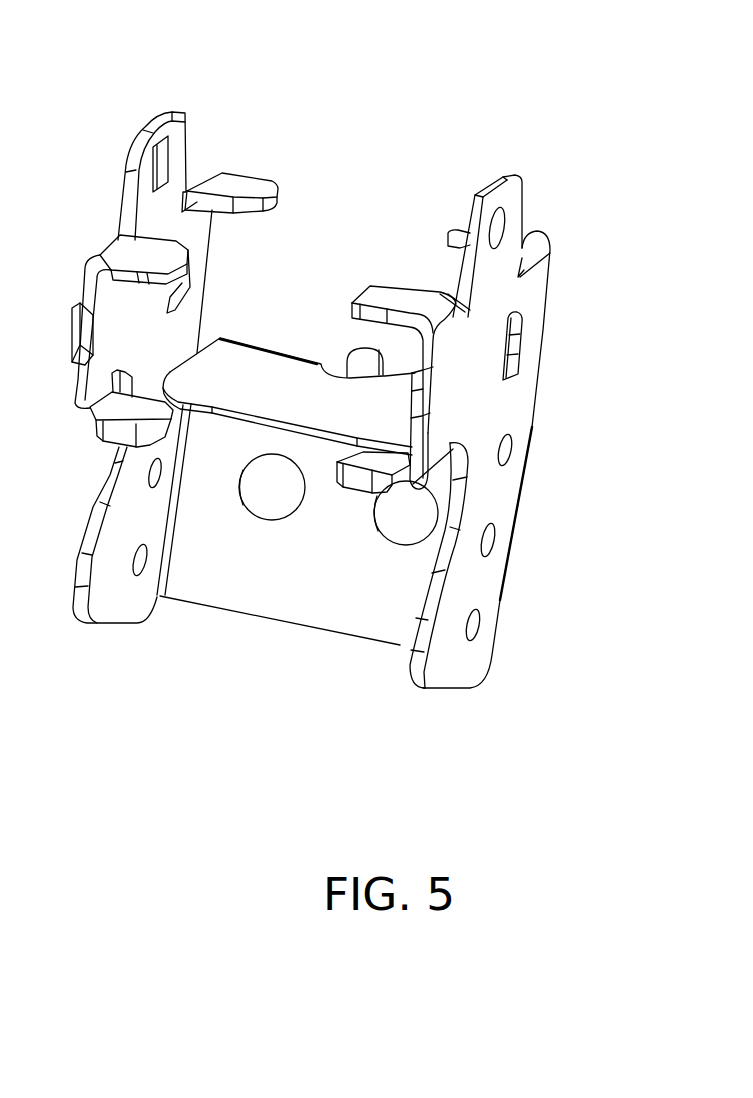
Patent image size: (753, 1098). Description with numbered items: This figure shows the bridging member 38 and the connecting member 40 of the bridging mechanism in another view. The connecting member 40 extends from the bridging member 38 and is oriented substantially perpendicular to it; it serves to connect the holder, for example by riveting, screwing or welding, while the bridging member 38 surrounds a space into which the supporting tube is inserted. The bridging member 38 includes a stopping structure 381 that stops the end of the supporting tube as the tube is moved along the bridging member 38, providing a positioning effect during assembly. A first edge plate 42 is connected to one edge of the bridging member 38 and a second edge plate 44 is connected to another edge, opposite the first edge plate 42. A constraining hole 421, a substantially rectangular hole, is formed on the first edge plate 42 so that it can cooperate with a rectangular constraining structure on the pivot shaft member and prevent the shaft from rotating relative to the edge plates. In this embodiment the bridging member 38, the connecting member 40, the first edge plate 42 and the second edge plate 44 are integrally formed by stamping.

The bridging member 38 is at (440, 97).
The stopping structure 381 is at (360, 363).
The connecting member 40 is at (333, 603).
The first edge plate 42 is at (186, 128).
The constraining hole 421 is at (167, 162).
The second edge plate 44 is at (518, 194).